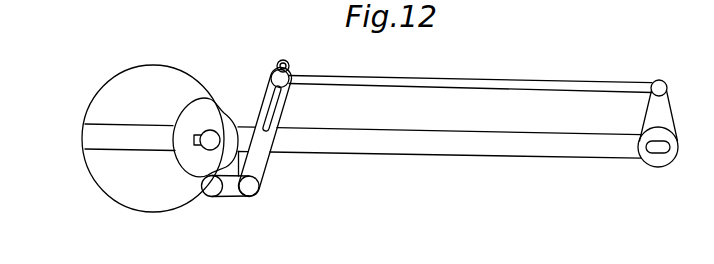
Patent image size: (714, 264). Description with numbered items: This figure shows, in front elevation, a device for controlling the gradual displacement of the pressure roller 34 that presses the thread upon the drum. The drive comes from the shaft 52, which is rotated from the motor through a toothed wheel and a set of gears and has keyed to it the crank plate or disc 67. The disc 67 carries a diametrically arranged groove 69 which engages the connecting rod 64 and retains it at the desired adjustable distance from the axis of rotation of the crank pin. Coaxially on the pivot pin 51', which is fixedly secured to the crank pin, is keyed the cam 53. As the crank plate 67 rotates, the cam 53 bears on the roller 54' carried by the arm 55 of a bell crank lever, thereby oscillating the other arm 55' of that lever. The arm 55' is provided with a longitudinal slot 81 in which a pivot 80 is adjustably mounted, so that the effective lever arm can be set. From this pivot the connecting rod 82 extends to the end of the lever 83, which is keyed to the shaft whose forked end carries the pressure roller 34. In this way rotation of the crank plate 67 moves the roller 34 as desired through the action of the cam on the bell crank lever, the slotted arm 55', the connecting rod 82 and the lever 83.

The groove 69 is at (108, 150).
The crank plate 67 is at (123, 183).
The shaft 52 is at (158, 144).
The connecting rod 64 is at (552, 148).
The cam 53 is at (194, 118).
The pivot pin 51' is at (227, 116).
The roller 54' is at (220, 206).
The arm 55 is at (237, 202).
The arm 55' is at (274, 131).
The longitudinal slot 81 is at (276, 101).
The pivot 80 is at (273, 73).
The connecting rod 82 is at (463, 81).
The lever 83 is at (648, 113).
The pressure roller 34 is at (657, 152).